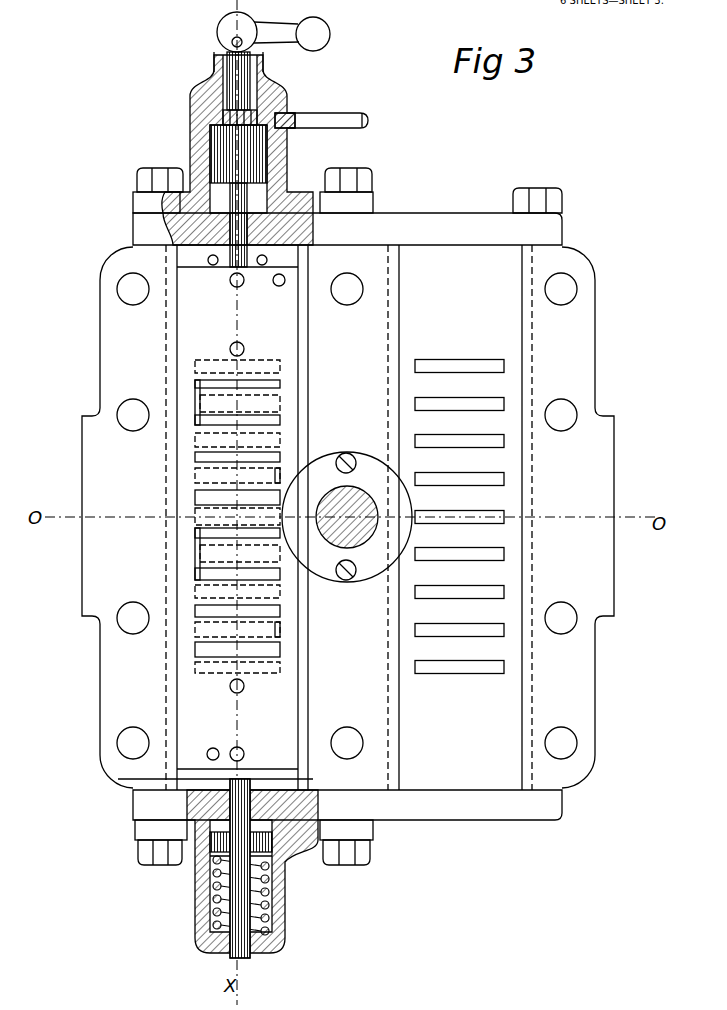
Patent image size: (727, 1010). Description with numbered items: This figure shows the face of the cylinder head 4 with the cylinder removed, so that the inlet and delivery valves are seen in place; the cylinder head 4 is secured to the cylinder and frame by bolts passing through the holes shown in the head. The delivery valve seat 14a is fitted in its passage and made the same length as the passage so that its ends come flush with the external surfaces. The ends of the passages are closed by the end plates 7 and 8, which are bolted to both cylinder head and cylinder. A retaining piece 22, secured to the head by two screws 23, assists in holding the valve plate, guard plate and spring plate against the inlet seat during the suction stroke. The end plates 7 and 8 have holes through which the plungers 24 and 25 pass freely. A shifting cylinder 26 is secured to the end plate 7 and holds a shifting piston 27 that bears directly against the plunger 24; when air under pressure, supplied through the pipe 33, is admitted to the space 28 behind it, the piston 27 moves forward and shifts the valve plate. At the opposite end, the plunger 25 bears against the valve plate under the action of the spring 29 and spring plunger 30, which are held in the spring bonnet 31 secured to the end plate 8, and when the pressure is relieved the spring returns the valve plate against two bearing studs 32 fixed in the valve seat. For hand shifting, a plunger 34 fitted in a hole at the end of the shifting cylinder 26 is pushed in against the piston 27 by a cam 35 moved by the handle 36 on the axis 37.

The cylinder head 4 is at (100, 350).
The end plate 7 is at (412, 222).
The end plate 8 is at (425, 812).
The delivery valve seat 14a is at (454, 262).
The retaining piece 22 is at (348, 452).
The screws 23 is at (347, 581).
The plunger 24 is at (177, 250).
The plunger 25 is at (160, 780).
The shifting cylinder 26 is at (192, 136).
The shifting piston 27 is at (262, 162).
The space 28 is at (262, 118).
The spring 29 is at (272, 907).
The spring plunger 30 is at (287, 862).
The spring bonnet 31 is at (195, 908).
The bearing studs 32 is at (208, 261).
The pipe 33 is at (369, 121).
The plunger 34 is at (230, 98).
The cam 35 is at (218, 34).
The handle 36 is at (313, 51).
The axis 37 is at (234, 45).